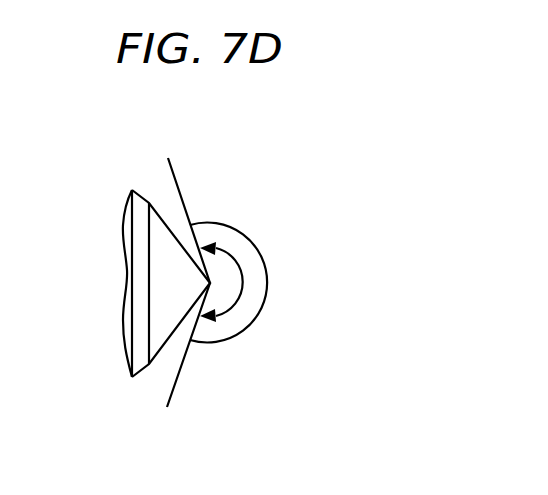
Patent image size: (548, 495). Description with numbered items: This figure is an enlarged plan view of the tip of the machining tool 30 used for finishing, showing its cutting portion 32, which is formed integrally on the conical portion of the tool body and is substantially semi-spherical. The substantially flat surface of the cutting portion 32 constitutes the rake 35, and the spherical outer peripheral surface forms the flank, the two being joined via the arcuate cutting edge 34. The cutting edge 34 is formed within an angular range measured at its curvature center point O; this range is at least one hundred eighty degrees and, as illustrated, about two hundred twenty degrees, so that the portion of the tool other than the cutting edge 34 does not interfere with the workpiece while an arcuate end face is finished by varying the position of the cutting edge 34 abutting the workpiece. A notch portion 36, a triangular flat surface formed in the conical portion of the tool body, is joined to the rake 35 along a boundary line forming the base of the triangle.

The machining tool 30 is at (94, 264).
The cutting portion 32 is at (244, 203).
The cutting edge 34 is at (257, 317).
The rake 35 is at (247, 248).
The notch portion 36 is at (139, 360).
The curvature center point O is at (210, 285).